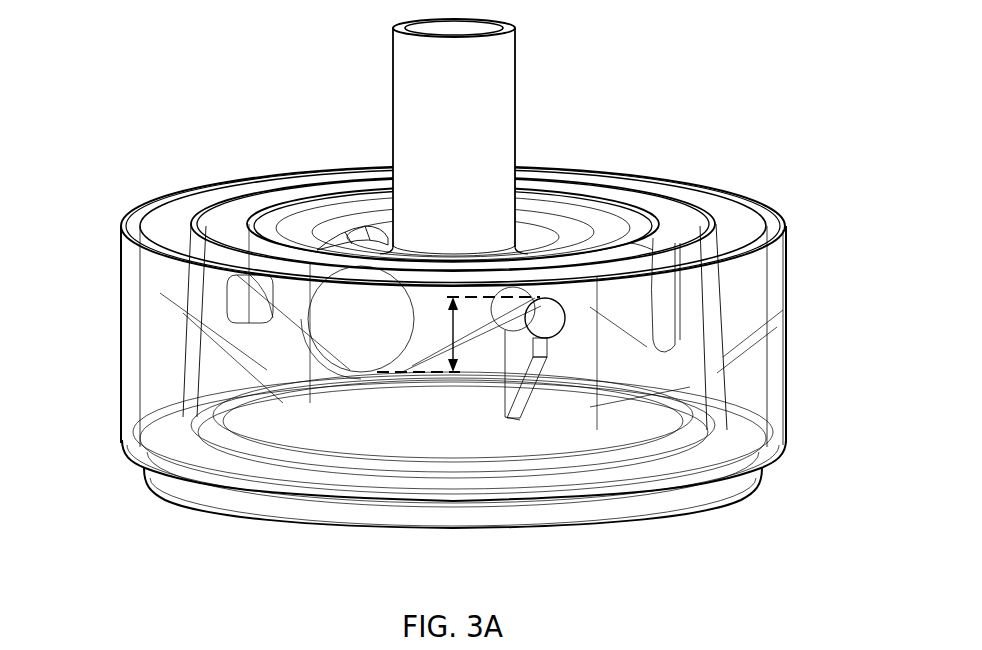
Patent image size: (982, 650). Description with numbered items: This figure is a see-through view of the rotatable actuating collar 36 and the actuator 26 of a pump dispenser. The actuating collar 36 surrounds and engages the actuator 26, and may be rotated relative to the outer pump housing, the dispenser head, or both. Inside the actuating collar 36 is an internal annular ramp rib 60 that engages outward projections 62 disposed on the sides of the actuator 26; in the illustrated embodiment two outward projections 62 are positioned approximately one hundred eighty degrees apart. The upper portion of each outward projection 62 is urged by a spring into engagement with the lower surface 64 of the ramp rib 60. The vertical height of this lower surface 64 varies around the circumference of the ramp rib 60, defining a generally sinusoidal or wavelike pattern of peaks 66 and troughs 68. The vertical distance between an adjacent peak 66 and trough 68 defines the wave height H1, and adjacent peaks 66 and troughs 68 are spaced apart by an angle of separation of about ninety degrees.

The actuator 26 is at (514, 240).
The actuating collar 36 is at (798, 319).
The ramp rib 60 is at (637, 326).
The outward projection 62 is at (548, 322).
The lower surface 64 is at (297, 329).
The peak 66 is at (362, 370).
The trough 68 is at (547, 297).
The wave height H1 is at (452, 335).